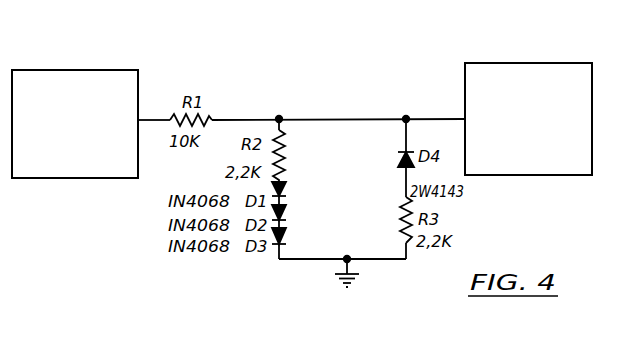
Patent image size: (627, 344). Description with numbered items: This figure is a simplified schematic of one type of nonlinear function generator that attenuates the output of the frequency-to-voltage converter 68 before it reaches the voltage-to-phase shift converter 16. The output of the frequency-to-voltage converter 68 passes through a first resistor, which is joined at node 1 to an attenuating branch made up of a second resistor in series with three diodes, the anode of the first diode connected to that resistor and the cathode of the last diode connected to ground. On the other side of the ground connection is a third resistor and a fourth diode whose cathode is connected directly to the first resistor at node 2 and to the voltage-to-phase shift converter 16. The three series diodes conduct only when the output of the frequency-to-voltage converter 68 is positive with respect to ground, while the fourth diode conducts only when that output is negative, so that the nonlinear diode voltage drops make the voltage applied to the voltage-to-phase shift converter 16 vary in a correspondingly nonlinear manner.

The frequency-to-voltage converter 68 is at (138, 70).
The voltage-to-phase shift converter 16 is at (570, 63).
The node 1 is at (281, 107).
The node 2 is at (406, 107).